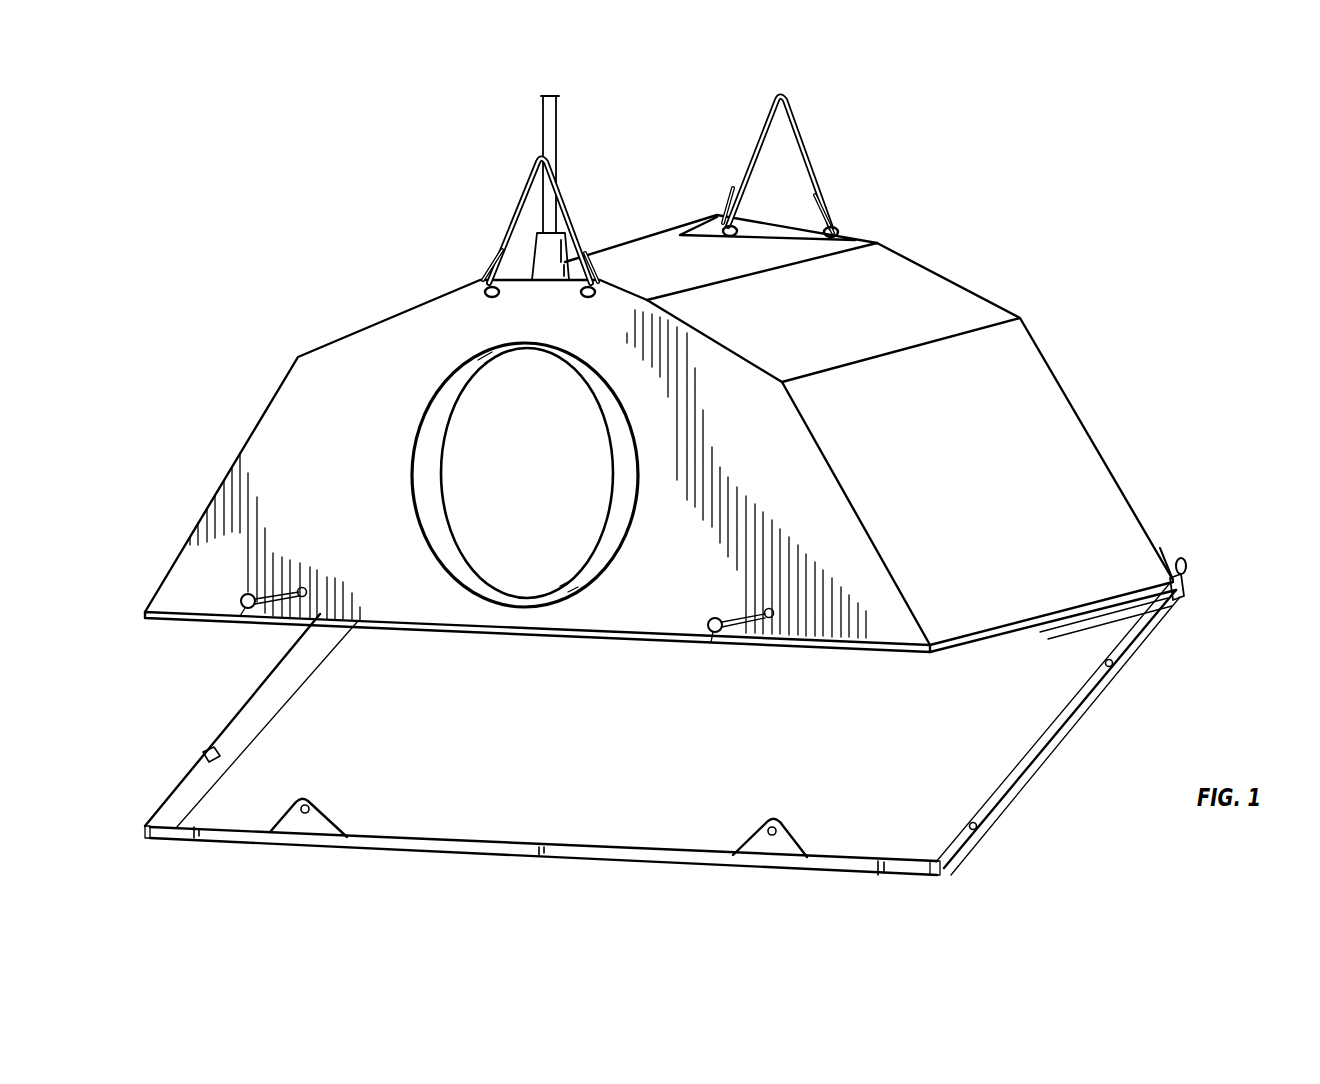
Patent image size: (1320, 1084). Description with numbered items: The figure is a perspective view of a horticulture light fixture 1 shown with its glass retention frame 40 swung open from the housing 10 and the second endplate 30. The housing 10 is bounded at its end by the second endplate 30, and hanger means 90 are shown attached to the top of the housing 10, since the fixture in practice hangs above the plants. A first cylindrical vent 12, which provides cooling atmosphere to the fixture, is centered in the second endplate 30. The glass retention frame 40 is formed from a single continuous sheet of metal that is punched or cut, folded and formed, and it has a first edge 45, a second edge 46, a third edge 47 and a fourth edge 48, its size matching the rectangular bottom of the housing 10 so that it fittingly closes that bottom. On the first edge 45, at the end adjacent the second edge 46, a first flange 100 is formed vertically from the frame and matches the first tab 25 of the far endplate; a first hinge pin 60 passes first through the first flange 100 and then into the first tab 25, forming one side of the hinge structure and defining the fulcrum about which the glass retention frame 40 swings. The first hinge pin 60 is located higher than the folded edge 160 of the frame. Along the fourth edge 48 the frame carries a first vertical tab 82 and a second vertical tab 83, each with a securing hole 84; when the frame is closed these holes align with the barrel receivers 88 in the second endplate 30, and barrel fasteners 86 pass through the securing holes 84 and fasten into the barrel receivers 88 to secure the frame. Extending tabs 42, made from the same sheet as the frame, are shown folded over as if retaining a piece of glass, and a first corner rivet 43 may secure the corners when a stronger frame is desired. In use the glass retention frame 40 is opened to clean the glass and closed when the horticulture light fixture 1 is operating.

The horticulture light fixture 1 is at (701, 502).
The housing 10 is at (669, 402).
The first cylindrical vent 12 is at (558, 583).
The first tab 25 is at (1162, 549).
The second endplate 30 is at (400, 362).
The glass retention frame 40 is at (701, 742).
The extending tabs 42 is at (207, 764).
The first corner rivet 43 is at (944, 876).
The first edge 45 is at (1039, 764).
The second edge 46 is at (1133, 608).
The third edge 47 is at (227, 754).
The fourth edge 48 is at (478, 851).
The first hinge pin 60 is at (1189, 560).
The first vertical tab 82 is at (784, 851).
The second vertical tab 83 is at (317, 832).
The securing hole 84 is at (296, 804).
The barrel fasteners 86 is at (235, 611).
The barrel receivers 88 is at (311, 593).
The hanger means 90 is at (487, 258).
The first flange 100 is at (1193, 582).
The folded edge 160 is at (1100, 690).